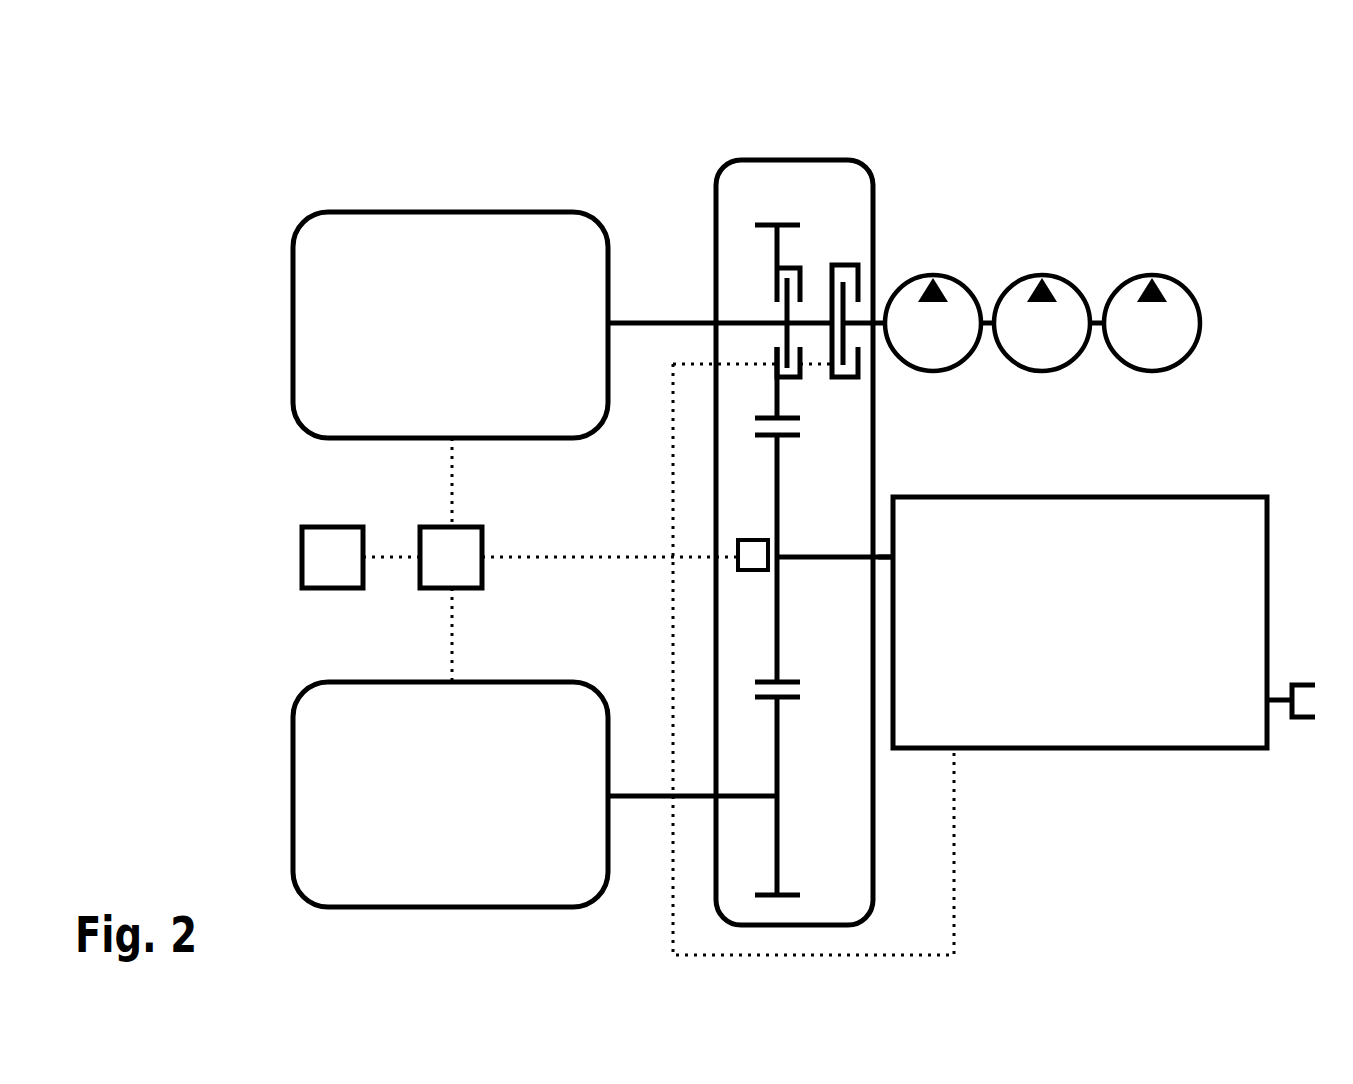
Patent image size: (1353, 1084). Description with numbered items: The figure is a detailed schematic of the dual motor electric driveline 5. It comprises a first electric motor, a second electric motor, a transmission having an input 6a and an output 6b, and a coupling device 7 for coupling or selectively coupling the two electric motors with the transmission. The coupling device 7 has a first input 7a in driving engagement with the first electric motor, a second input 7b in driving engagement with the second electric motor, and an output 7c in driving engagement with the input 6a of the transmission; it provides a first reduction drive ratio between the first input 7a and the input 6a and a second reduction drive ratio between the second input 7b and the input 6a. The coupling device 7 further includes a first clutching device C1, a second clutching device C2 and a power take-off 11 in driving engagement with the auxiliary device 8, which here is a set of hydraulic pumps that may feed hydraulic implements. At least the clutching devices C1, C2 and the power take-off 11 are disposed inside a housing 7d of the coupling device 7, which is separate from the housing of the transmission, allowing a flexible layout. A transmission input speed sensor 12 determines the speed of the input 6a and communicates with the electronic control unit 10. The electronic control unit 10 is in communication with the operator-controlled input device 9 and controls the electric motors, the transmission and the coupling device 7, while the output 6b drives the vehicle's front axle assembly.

The dual motor electric driveline 5 is at (181, 90).
The input of the transmission 6a is at (880, 560).
The output of the transmission 6b is at (1278, 708).
The coupling device 7 is at (841, 160).
The first input of the coupling device 7a is at (620, 795).
The second input of the coupling device 7b is at (650, 320).
The output of the coupling device 7c is at (793, 555).
The housing of the coupling device 7d is at (875, 828).
The auxiliary device 8 is at (1092, 213).
The input device 9 is at (345, 573).
The electronic control unit 10 is at (470, 573).
The power take-off 11 is at (878, 320).
The transmission input speed sensor 12 is at (757, 572).
The first clutching device C1 is at (830, 385).
The second clutching device C2 is at (850, 246).